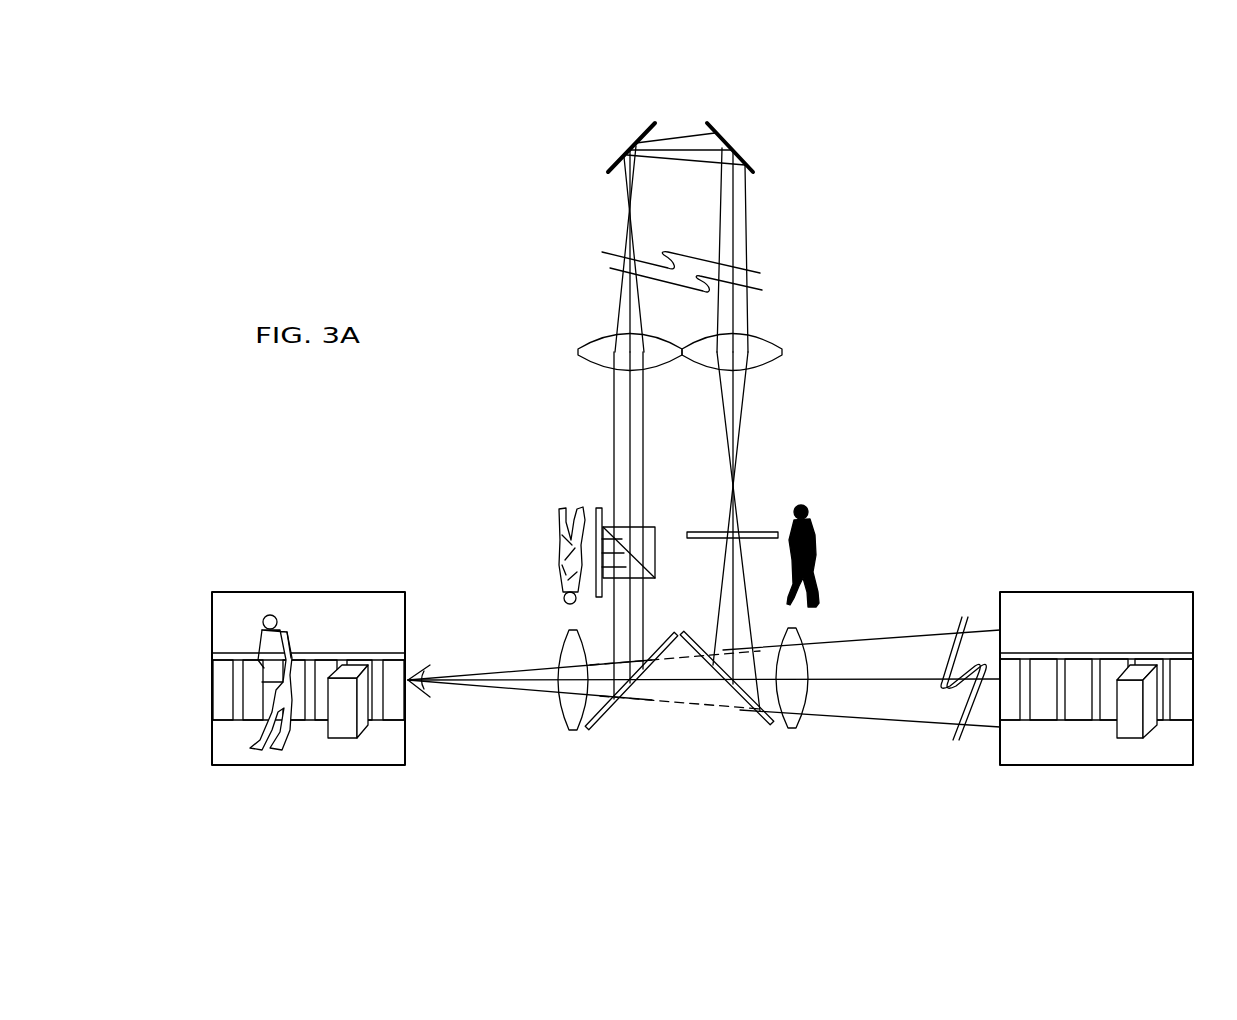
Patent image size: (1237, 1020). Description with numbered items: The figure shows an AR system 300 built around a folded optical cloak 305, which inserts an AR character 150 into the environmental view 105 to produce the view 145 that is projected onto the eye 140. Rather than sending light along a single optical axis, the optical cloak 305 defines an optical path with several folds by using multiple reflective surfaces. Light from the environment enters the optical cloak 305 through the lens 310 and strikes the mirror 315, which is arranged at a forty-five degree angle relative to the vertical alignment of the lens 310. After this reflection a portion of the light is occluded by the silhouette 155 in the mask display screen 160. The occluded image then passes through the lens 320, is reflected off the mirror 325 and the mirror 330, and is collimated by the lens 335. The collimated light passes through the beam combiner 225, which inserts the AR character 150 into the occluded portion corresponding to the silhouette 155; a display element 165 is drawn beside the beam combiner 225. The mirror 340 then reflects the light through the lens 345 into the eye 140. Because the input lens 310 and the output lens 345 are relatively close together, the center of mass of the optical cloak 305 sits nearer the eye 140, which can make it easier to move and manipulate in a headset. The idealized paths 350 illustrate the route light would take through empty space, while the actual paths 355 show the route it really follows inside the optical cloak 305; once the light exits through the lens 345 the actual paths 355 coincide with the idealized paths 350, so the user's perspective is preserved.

The AR system 300 is at (944, 97).
The folded optical cloak 305 is at (893, 120).
The mirror 330 is at (637, 139).
The mirror 325 is at (715, 127).
The lens 335 is at (578, 352).
The lens 320 is at (784, 350).
The display plate 165 is at (600, 507).
The beam combiner 225 is at (655, 527).
The mask display screen 160 is at (758, 532).
The AR character 150 is at (558, 527).
The silhouette 155 is at (815, 518).
The eye 140 is at (423, 663).
The lens 345 is at (563, 645).
The mirror 340 is at (586, 728).
The mirror 315 is at (771, 724).
The idealized paths 350 is at (670, 703).
The actual paths 355 is at (737, 703).
The lens 310 is at (798, 630).
The view 145 is at (258, 767).
The environmental view 105 is at (1042, 767).